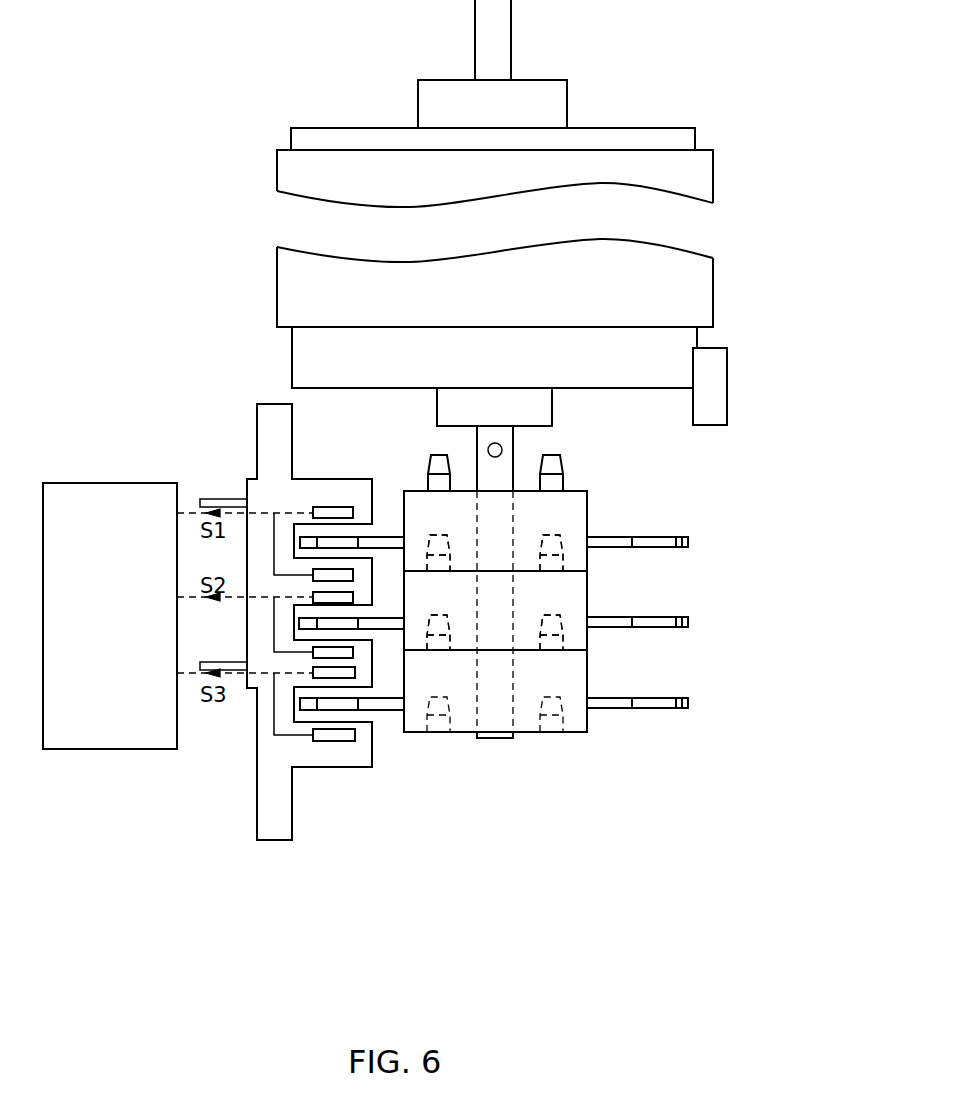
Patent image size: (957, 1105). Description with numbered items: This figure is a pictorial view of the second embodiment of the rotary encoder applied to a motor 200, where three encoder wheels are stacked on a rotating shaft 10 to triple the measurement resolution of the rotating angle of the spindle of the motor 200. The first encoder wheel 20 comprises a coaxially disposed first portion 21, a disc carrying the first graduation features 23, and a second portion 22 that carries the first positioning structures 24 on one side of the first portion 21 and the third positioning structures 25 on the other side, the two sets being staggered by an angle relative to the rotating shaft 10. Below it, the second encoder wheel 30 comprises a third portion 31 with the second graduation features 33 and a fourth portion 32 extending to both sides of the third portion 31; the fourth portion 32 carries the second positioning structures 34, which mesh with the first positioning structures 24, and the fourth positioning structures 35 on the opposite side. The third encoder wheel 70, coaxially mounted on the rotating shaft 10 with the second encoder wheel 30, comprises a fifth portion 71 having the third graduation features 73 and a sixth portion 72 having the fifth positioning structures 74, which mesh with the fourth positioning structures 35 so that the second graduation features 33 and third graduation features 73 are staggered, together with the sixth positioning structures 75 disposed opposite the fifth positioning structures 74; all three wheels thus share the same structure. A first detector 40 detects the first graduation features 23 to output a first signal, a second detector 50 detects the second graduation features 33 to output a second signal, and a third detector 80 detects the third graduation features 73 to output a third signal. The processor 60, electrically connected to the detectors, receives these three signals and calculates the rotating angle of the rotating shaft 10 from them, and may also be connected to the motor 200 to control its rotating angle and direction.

The rotating shaft 10 is at (498, 740).
The first encoder wheel 20 is at (527, 491).
The first portion 21 is at (688, 541).
The second portion 22 is at (580, 504).
The first graduation features 23 is at (680, 535).
The first positioning structures 24 is at (495, 553).
The second positioning structures 34 is at (562, 540).
The third positioning structures 25 is at (553, 467).
The second encoder wheel 30 is at (529, 668).
The third portion 31 is at (688, 621).
The fourth portion 32 is at (580, 587).
The second graduation features 33 is at (680, 615).
The fourth positioning structures 35 is at (495, 632).
The fifth positioning structures 74 is at (560, 620).
The first detector 40 is at (340, 577).
The second detector 50 is at (312, 600).
The processor 60 is at (112, 482).
The third encoder wheel 70 is at (530, 738).
The fifth portion 71 is at (688, 702).
The sixth portion 72 is at (580, 670).
The third graduation features 73 is at (680, 697).
The sixth positioning structures 75 is at (560, 700).
The third detector 80 is at (323, 678).
The motor 200 is at (715, 292).